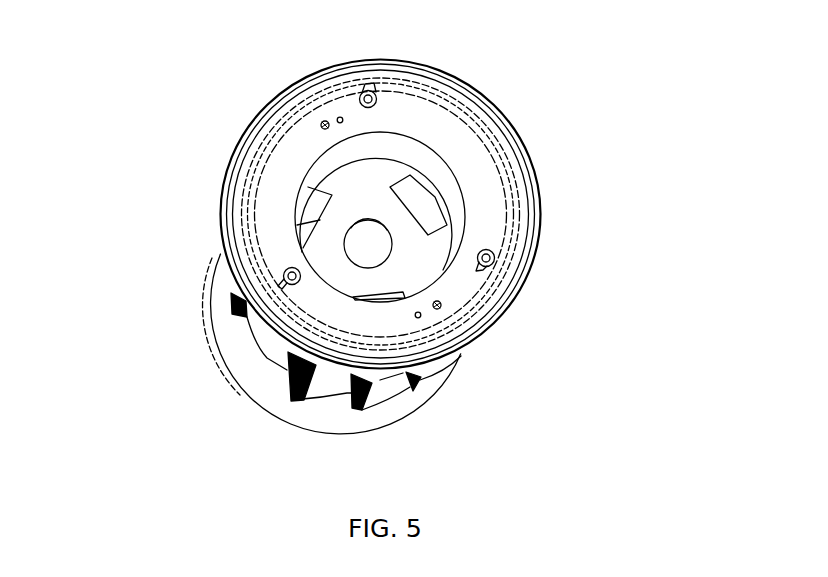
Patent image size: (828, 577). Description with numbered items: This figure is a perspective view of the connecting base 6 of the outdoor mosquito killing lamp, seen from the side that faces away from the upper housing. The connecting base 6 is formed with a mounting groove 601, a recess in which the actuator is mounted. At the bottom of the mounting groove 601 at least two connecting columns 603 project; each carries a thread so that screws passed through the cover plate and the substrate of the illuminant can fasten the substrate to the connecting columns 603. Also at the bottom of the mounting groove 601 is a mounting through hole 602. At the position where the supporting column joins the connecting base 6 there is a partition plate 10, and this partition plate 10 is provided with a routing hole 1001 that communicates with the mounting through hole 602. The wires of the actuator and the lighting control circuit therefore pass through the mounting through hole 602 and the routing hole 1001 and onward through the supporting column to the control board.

The connecting base 6 is at (513, 137).
The mounting groove 601 is at (447, 125).
The mounting through hole 602 is at (367, 152).
The connecting columns 603 is at (283, 274).
The partition plate 10 is at (433, 252).
The routing hole 1001 is at (378, 242).